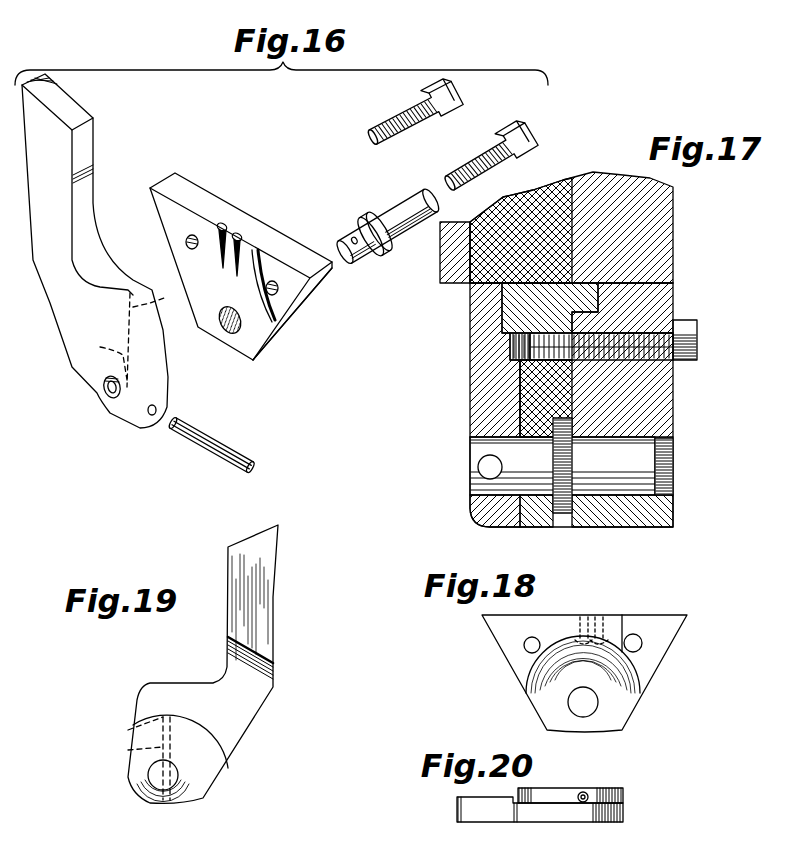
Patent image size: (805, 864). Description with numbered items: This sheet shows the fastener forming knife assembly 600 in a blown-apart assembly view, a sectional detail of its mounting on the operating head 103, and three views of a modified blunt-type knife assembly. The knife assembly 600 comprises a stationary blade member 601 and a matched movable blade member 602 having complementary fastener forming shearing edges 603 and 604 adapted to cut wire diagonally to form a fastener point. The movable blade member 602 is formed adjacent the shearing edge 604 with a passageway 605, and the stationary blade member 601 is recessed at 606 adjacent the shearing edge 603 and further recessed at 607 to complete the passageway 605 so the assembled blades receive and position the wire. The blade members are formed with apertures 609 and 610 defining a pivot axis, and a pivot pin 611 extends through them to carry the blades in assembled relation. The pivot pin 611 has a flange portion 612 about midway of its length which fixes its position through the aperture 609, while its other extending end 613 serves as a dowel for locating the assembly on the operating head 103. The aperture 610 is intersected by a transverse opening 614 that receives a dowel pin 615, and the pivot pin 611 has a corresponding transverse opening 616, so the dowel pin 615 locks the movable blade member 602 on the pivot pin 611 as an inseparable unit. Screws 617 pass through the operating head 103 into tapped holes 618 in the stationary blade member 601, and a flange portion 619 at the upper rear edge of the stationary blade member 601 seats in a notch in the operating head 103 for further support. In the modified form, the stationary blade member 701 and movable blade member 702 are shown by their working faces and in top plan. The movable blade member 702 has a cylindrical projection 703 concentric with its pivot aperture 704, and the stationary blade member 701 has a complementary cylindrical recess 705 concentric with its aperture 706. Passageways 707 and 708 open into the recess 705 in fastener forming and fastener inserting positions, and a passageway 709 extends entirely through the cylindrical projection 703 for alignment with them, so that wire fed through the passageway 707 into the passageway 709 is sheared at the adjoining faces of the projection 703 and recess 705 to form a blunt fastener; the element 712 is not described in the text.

In FIG. 17, the operating head 103 is at (660, 300).
In FIG. 17, the fastener forming knife assembly 600 is at (474, 526).
In FIG. 16, the stationary blade member 601 is at (193, 178).
In FIG. 17, the stationary blade member 601 is at (527, 388).
In FIG. 16, the movable blade member 602 is at (68, 362).
In FIG. 17, the movable blade member 602 is at (480, 352).
In FIG. 16, the shearing edge 603 is at (237, 266).
In FIG. 16, the shearing edge 604 is at (168, 300).
In FIG. 16, the passageway 605 is at (102, 340).
In FIG. 16, the recess 606 is at (243, 235).
In FIG. 16, the recess 607 is at (226, 226).
In FIG. 16, the aperture 609 is at (232, 327).
In FIG. 16, the aperture 610 is at (115, 400).
In FIG. 16, the pivot pin 611 is at (342, 240).
In FIG. 17, the pivot pin 611 is at (487, 448).
In FIG. 16, the flange portion 612 is at (373, 217).
In FIG. 17, the flange portion 612 is at (560, 513).
In FIG. 16, the extending end of pivot pin 613 is at (410, 200).
In FIG. 17, the extending end of pivot pin 613 is at (643, 472).
In FIG. 16, the transverse opening 614 is at (153, 417).
In FIG. 16, the dowel pin 615 is at (210, 452).
In FIG. 17, the dowel pin 615 is at (490, 468).
In FIG. 16, the transverse opening 616 is at (368, 260).
In FIG. 16, the screws 617 is at (387, 123).
In FIG. 17, the screws 617 is at (697, 347).
In FIG. 16, the tapped holes 618 is at (185, 242).
In FIG. 17, the tapped holes 618 is at (510, 337).
In FIG. 16, the flange portion 619 is at (335, 270).
In FIG. 17, the flange portion 619 is at (593, 303).
In FIG. 18, the stationary blade member 701 is at (500, 643).
In FIG. 19, the movable blade member 702 is at (245, 722).
In FIG. 20, the movable blade member 702 is at (555, 815).
In FIG. 19, the cylindrical projection 703 is at (210, 757).
In FIG. 20, the cylindrical projection 703 is at (557, 793).
In FIG. 19, the aperture 704 is at (170, 783).
In FIG. 18, the cylindrical recess 705 is at (537, 698).
In FIG. 18, the aperture 706 is at (590, 707).
In FIG. 18, the passageway 707 is at (620, 615).
In FIG. 18, the passageway 708 is at (570, 617).
In FIG. 19, the passageway 709 is at (130, 752).
In FIG. 19, the screw 712 is at (130, 730).
In FIG. 20, the screw 712 is at (588, 795).